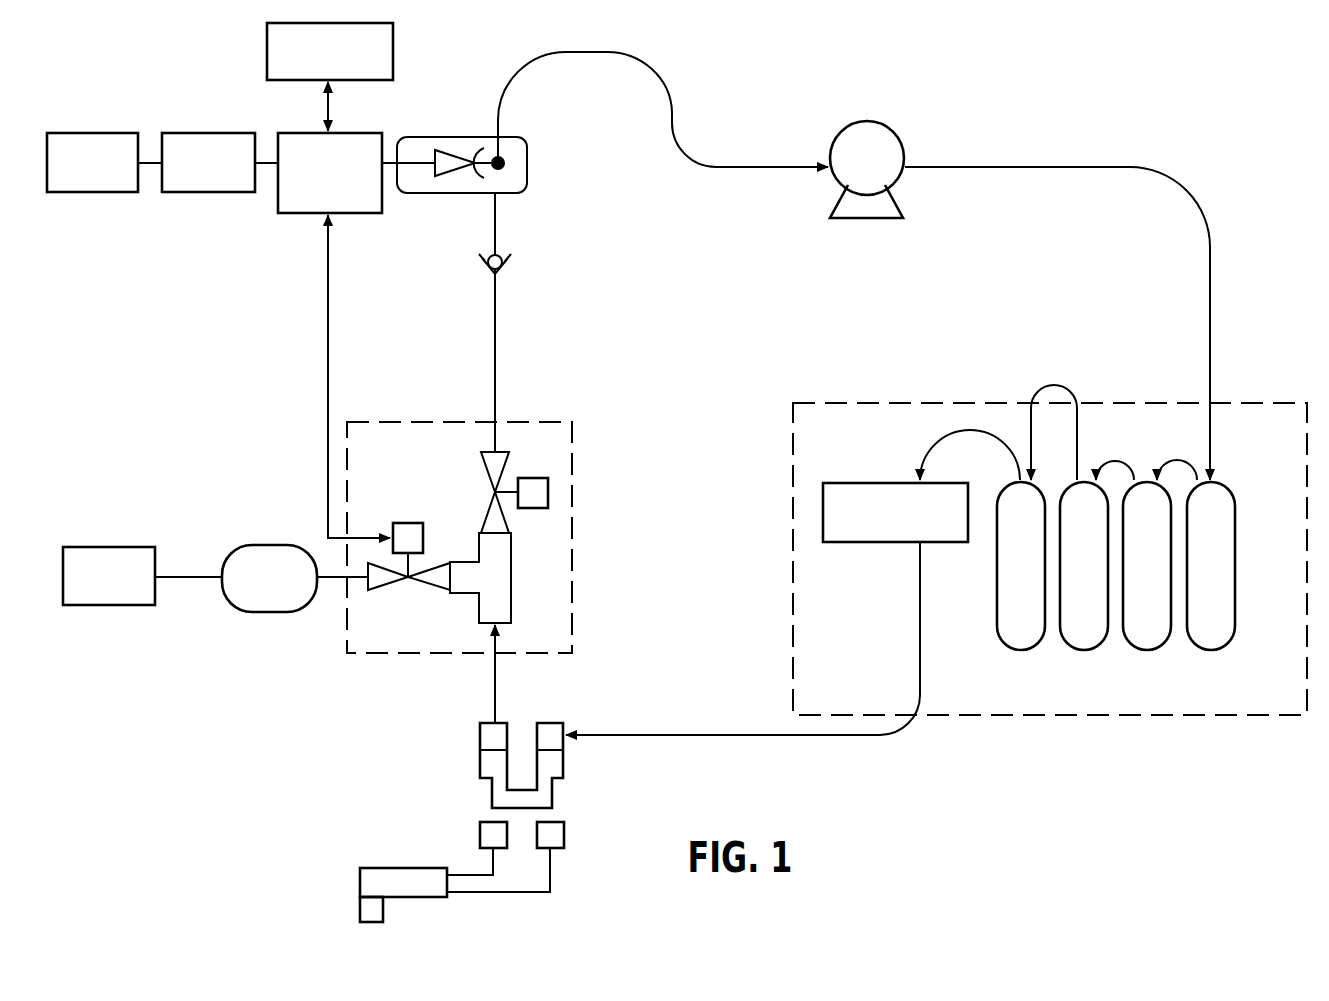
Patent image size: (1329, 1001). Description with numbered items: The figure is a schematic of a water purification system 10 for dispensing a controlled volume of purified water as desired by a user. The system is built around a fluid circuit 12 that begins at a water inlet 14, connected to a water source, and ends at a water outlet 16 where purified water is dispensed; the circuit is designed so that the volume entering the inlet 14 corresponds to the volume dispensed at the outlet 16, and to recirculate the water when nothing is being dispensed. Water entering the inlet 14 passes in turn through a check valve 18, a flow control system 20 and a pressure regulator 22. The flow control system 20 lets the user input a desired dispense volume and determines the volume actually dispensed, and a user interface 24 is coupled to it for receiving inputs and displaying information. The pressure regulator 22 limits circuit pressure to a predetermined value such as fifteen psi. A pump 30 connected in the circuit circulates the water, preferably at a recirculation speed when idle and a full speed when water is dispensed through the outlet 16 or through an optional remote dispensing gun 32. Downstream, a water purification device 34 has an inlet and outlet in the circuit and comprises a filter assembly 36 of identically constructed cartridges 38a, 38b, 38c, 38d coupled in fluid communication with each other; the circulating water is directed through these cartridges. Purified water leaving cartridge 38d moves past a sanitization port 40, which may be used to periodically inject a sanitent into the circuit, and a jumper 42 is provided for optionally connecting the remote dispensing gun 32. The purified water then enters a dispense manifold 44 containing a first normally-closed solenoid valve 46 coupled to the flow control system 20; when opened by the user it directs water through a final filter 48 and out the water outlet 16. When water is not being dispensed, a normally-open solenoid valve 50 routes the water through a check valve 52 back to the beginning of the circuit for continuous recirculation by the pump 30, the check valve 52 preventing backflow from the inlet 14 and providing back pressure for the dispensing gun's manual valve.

The water purification system 10 is at (1219, 131).
The fluid circuit 12 is at (993, 167).
The water inlet 14 is at (105, 133).
The water outlet 16 is at (131, 547).
The check valve 18 is at (227, 133).
The flow control system 20 is at (353, 133).
The pressure regulator 22 is at (438, 137).
The user interface 24 is at (393, 58).
The pump 30 is at (867, 121).
The remote dispensing gun 32 is at (390, 868).
The water purification device 34 is at (1237, 403).
The filter assembly 36 is at (1245, 476).
The cartridge 38a is at (1228, 650).
The cartridge 38b is at (1148, 652).
The cartridge 38c is at (1078, 652).
The cartridge 38d is at (1011, 652).
The sanitization port 40 is at (853, 483).
The jumper 42 is at (553, 806).
The dispense manifold 44 is at (538, 422).
The normally-closed solenoid valve 46 is at (433, 535).
The final filter 48 is at (259, 545).
The normally-open solenoid valve 50 is at (514, 475).
The check valve 52 is at (501, 257).